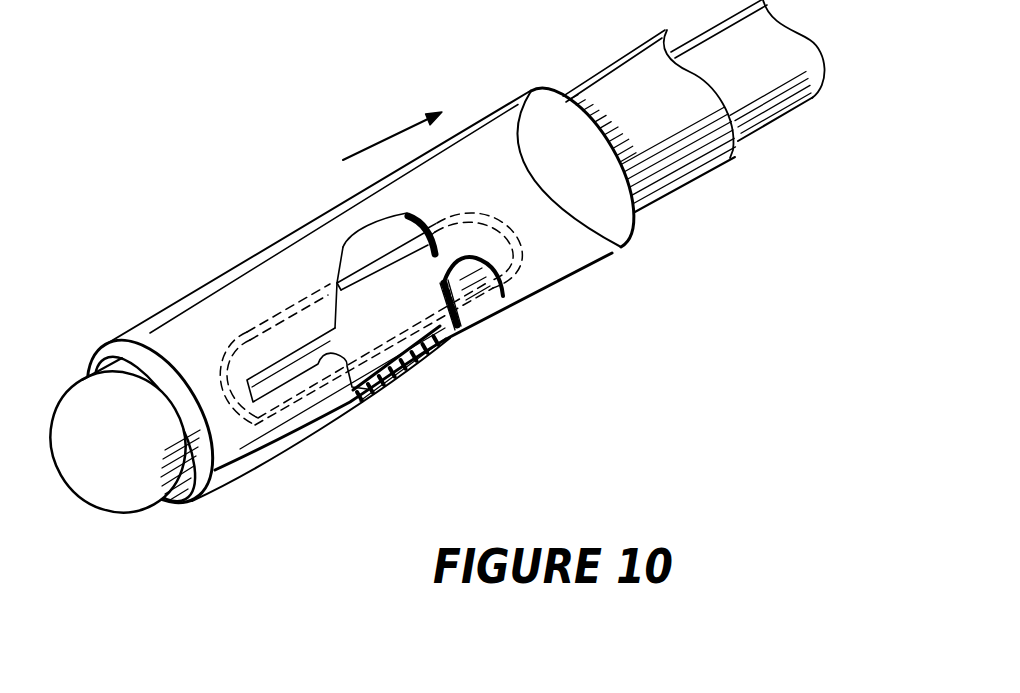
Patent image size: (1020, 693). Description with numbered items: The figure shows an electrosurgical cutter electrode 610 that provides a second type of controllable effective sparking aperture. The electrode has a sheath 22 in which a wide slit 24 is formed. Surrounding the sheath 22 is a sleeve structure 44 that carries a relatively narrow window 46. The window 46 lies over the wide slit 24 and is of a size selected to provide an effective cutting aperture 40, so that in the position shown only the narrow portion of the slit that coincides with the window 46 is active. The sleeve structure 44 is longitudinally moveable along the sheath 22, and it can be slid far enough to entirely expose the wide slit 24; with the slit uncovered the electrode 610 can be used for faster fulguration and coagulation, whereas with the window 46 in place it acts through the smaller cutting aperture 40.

The electrosurgical cutter electrode 610 is at (425, 268).
The sleeve structure 44 is at (202, 272).
The sheath 22 is at (660, 212).
The effective cutting aperture 40 is at (273, 372).
The window 46 is at (497, 294).
The wide slit 24 is at (420, 329).